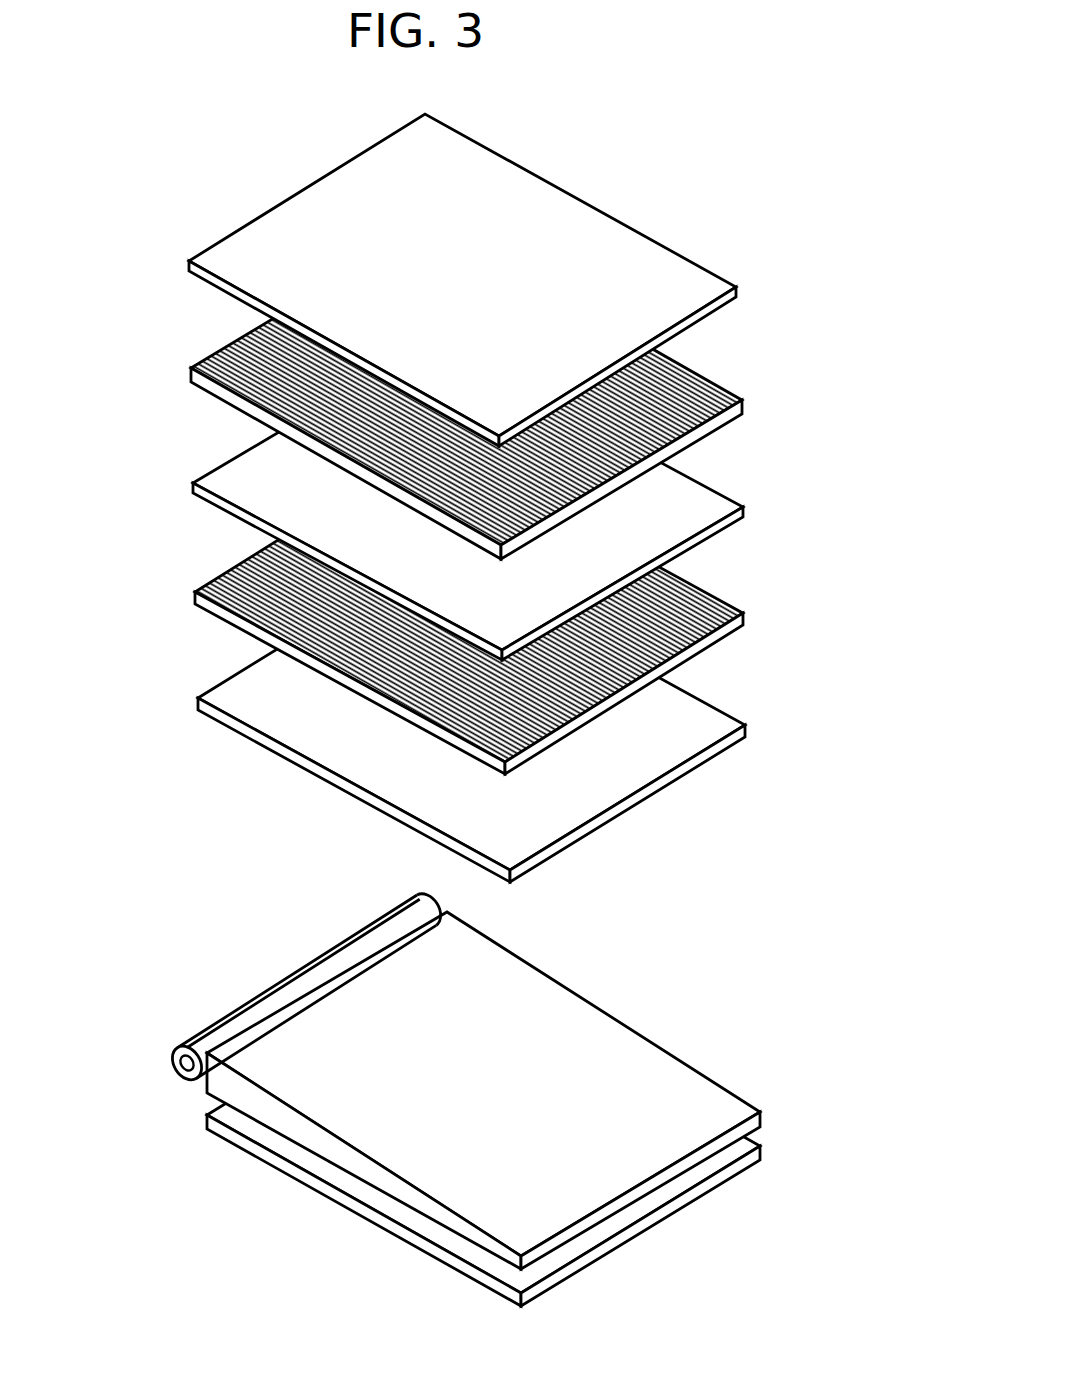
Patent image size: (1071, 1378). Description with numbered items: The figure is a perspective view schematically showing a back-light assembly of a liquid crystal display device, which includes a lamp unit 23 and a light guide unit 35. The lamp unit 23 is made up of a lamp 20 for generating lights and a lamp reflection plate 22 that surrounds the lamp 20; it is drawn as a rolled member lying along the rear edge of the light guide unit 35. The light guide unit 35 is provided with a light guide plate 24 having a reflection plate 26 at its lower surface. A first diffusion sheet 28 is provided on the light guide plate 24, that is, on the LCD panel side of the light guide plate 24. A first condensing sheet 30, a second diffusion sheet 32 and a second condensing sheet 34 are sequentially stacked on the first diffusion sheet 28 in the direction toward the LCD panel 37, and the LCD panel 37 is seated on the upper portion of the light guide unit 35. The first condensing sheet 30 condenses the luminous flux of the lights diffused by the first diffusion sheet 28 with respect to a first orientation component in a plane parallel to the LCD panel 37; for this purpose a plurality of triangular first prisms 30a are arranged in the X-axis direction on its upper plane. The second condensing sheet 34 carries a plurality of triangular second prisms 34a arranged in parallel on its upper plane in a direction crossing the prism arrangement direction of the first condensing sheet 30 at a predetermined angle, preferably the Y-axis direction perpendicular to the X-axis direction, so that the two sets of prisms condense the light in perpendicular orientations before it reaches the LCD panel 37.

The lamp 20 is at (185, 1062).
The lamp reflection plate 22 is at (186, 1032).
The lamp unit 23 is at (234, 1010).
The light guide plate 24 is at (587, 1025).
The reflection plate 26 is at (343, 1196).
The first diffusion sheet 28 is at (750, 727).
The first condensing sheet 30 is at (520, 608).
The first prisms 30a is at (707, 600).
The second diffusion sheet 32 is at (747, 511).
The second condensing sheet 34 is at (516, 391).
The second prisms 34a is at (703, 381).
The light guide unit 35 is at (546, 708).
The LCD panel 37 is at (507, 280).